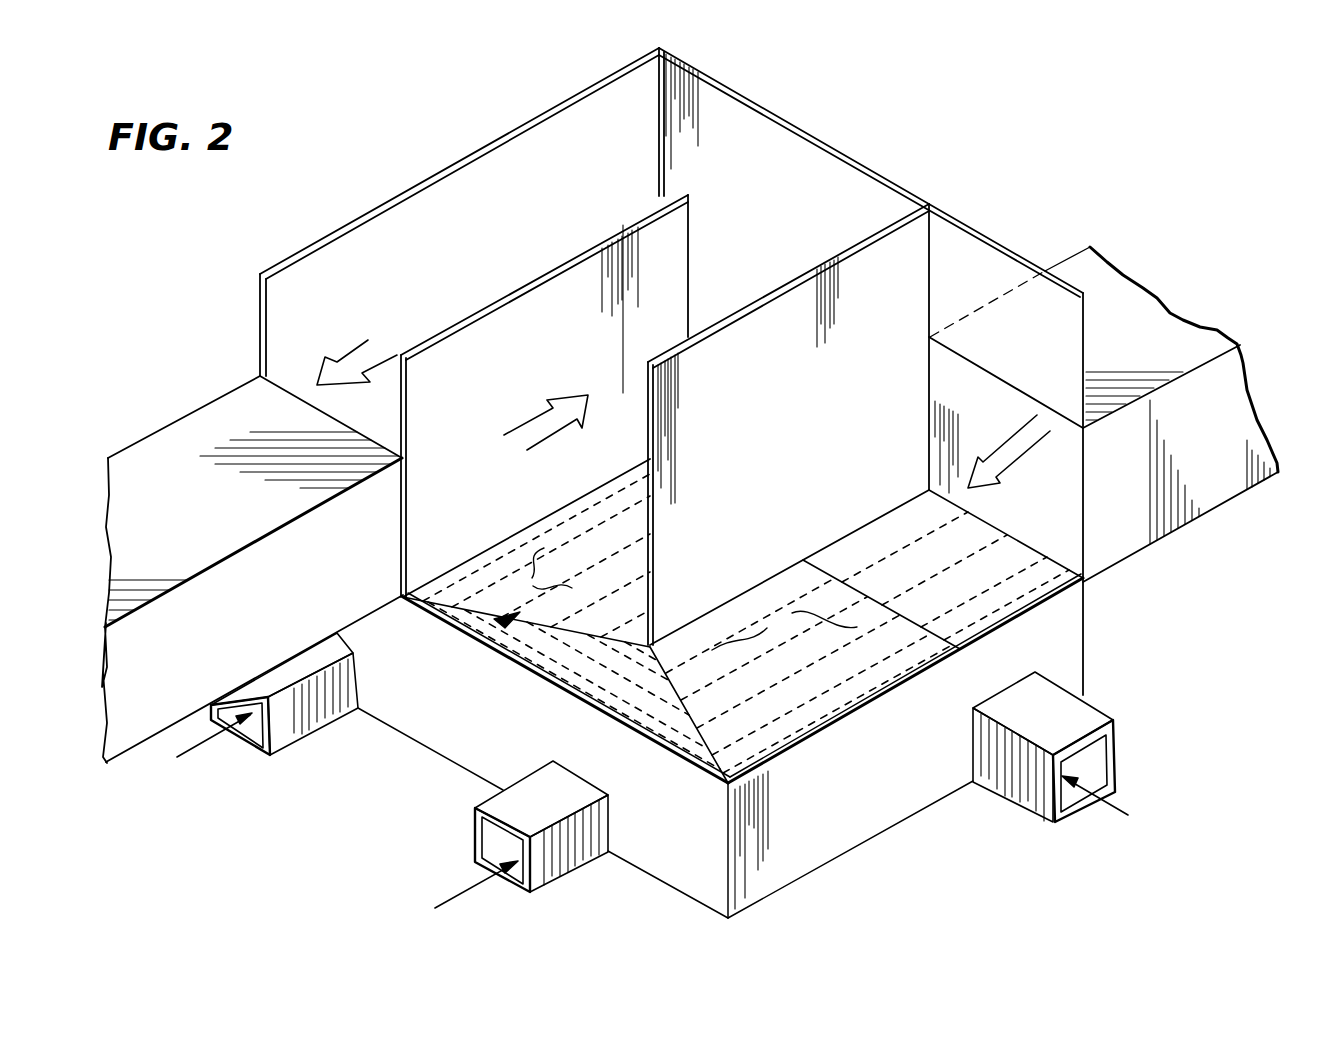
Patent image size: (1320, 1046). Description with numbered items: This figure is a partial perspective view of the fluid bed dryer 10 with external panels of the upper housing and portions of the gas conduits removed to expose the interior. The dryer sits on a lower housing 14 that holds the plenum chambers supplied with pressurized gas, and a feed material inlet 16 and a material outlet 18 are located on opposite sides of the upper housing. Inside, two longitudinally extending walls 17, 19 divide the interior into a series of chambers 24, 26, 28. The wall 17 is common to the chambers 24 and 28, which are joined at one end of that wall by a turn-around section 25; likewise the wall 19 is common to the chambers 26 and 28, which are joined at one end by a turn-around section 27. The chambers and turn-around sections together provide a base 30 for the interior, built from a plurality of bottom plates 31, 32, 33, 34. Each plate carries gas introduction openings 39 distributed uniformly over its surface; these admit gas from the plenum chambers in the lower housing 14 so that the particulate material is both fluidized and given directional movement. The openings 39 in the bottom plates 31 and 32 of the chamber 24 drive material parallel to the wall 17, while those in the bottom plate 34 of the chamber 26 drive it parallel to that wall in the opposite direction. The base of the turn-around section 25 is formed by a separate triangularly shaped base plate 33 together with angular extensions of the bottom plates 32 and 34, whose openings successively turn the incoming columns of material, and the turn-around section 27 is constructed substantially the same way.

The fluid bed dryer 10 is at (886, 115).
The lower housing 14 is at (492, 762).
The feed material inlet 16 is at (1073, 257).
The wall 17 is at (836, 398).
The material outlet 18 is at (182, 433).
The wall 19 is at (558, 358).
The chamber 24 is at (938, 272).
The turn-around section 25 is at (515, 615).
The chamber 26 is at (784, 250).
The turn-around section 27 is at (740, 158).
The chamber 28 is at (474, 238).
The base 30 is at (786, 752).
The bottom plate 31 is at (960, 600).
The bottom plate 32 is at (815, 691).
The triangularly shaped base plate 33 is at (605, 685).
The bottom plate 34 is at (597, 562).
The gas introduction openings 39 is at (680, 599).